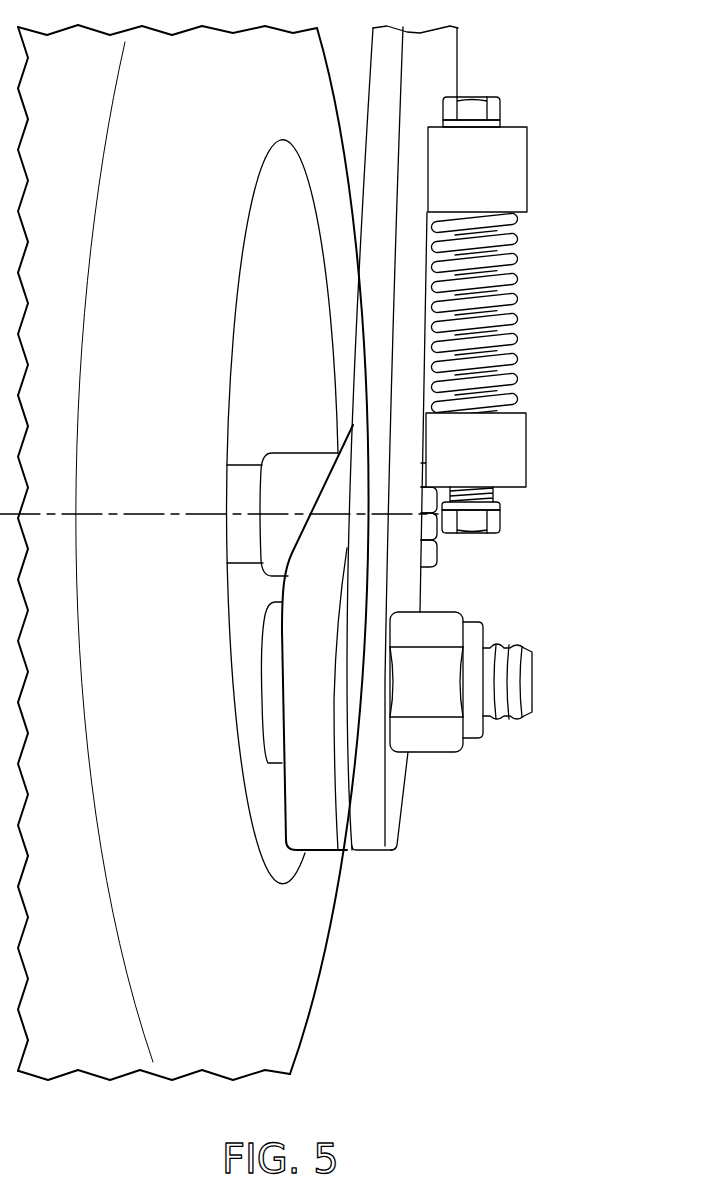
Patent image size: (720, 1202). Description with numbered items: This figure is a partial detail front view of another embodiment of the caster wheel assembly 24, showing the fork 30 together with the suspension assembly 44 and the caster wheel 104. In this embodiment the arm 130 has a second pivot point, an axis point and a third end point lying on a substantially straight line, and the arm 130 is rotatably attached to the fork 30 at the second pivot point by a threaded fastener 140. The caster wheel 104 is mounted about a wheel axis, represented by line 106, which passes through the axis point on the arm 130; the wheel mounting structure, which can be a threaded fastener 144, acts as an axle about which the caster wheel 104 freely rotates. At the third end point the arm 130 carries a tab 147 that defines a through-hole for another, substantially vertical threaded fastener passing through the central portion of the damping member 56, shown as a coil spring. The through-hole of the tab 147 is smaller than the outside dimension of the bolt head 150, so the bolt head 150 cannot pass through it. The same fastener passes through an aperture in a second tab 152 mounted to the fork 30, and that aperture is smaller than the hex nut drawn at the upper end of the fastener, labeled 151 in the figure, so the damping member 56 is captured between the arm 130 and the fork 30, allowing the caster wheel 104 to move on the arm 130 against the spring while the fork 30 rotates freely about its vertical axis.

The caster wheel assembly 24 is at (485, 967).
The fork 30 is at (380, 852).
The suspension assembly 44 is at (617, 103).
The damping member 56 is at (518, 312).
The caster wheel 104 is at (325, 983).
The wheel axis 106 is at (105, 514).
The arm 130 is at (282, 822).
The threaded fastener 140 is at (532, 680).
The threaded fastener 144 is at (437, 552).
The tab 147 is at (526, 450).
The bolt head 150 is at (500, 520).
The bolt head 151 is at (500, 111).
The tab 152 is at (527, 147).